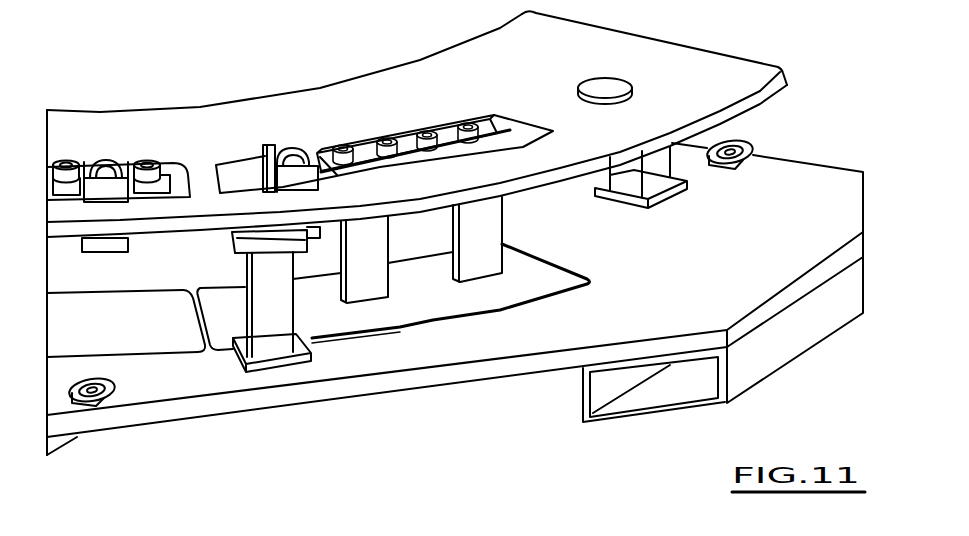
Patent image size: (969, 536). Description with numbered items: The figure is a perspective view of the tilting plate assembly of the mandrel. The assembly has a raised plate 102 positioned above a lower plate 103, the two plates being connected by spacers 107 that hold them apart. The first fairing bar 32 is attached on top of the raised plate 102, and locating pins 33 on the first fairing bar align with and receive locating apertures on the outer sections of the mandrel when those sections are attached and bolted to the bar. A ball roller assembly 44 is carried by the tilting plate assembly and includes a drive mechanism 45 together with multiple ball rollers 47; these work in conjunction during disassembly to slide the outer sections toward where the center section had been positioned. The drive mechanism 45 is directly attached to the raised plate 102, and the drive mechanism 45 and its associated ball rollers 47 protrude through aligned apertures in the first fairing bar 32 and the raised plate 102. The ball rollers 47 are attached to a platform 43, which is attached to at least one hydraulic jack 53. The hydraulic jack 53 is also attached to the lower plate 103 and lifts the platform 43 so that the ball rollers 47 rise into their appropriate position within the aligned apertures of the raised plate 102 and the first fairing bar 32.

The raised plate 102 is at (560, 14).
The lower plate 103 is at (863, 203).
The locating pin 33 is at (633, 86).
The ball rollers 47 is at (339, 152).
The drive mechanism 45 is at (285, 148).
The ball roller assembly 44 is at (430, 130).
The first fairing bar 32 is at (461, 153).
The hydraulic jack 53 is at (480, 278).
The platform 43 is at (523, 283).
The spacers 107 is at (273, 346).